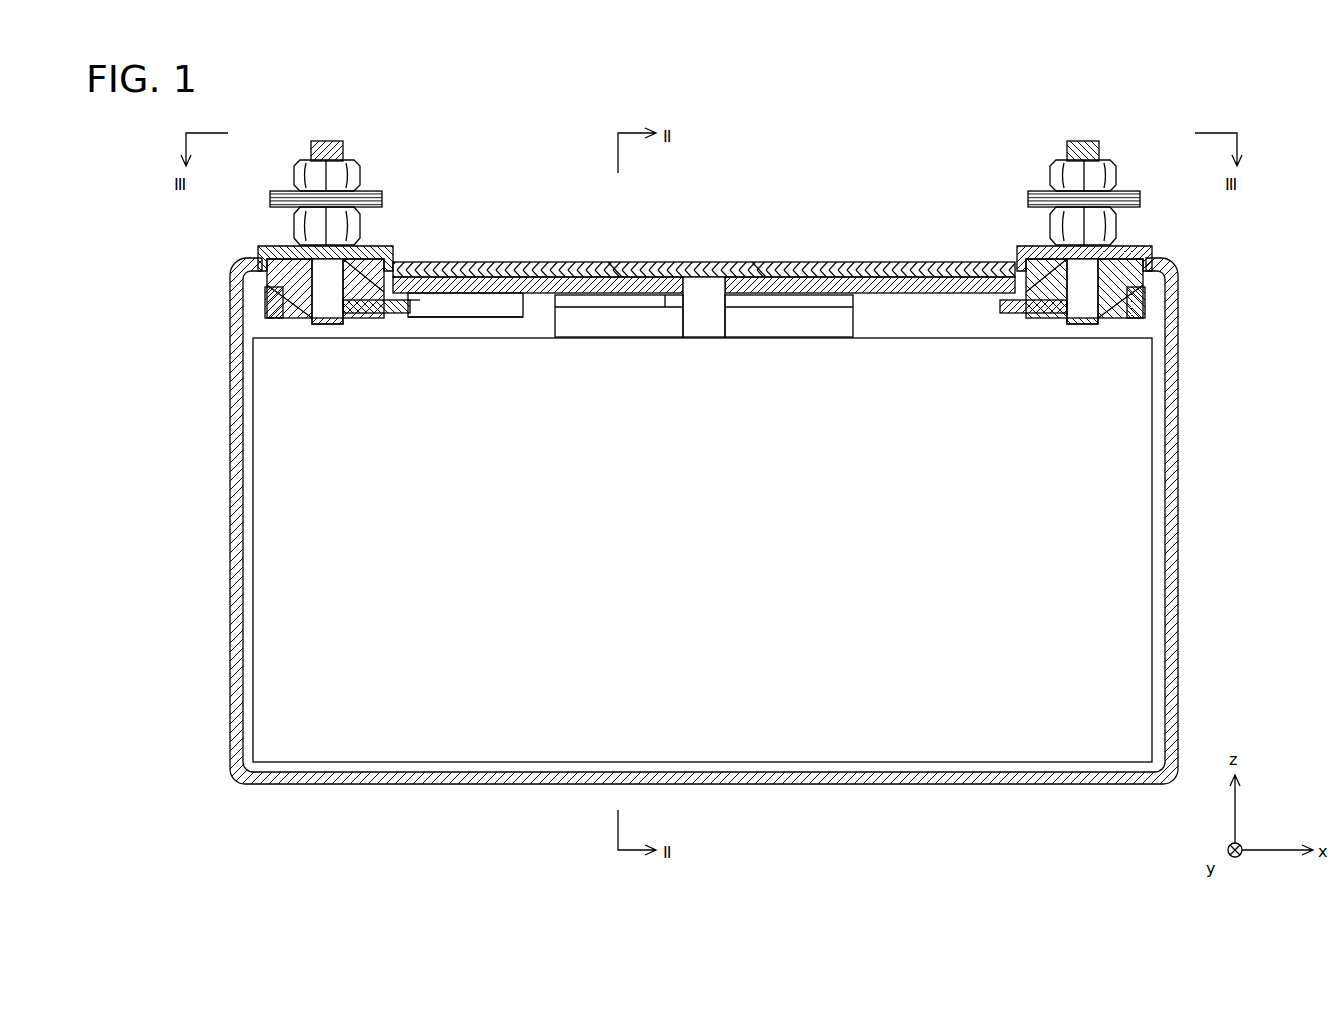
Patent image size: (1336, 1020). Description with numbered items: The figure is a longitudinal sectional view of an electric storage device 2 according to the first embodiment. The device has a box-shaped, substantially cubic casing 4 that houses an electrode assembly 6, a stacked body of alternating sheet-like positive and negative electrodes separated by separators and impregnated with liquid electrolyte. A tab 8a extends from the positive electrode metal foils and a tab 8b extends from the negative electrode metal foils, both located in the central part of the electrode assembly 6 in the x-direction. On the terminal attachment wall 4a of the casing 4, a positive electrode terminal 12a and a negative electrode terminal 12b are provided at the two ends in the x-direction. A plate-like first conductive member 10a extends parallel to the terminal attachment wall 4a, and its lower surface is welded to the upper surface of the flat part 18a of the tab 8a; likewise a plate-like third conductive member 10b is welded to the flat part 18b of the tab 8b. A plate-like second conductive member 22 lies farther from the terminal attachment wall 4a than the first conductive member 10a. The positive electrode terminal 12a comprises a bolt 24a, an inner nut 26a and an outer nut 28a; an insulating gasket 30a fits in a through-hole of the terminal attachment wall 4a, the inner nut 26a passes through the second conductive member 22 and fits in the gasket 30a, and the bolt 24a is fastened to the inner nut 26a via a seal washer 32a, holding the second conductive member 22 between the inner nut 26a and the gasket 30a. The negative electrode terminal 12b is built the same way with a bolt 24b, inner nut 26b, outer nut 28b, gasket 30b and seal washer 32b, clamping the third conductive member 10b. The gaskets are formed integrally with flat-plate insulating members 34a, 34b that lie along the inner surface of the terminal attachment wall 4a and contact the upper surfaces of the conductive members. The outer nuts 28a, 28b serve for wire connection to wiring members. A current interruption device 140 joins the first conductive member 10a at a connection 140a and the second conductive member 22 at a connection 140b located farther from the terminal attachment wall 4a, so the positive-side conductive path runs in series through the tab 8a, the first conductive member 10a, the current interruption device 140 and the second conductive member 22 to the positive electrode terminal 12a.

The electric storage device 2 is at (948, 96).
The casing 4 is at (1178, 522).
The terminal attachment wall 4a is at (718, 275).
The electrode assembly 6 is at (1095, 612).
The tab 8a is at (680, 272).
The tab 8b is at (806, 317).
The first conductive member 10a is at (532, 287).
The third conductive member 10b is at (888, 287).
The positive electrode terminal 12a is at (352, 136).
The negative electrode terminal 12b is at (1093, 136).
The flat part 18a is at (652, 302).
The flat part 18b is at (792, 300).
The second conductive member 22 is at (385, 308).
The bolt 24a is at (305, 228).
The bolt 24b is at (1105, 228).
The inner nut 26a is at (286, 313).
The inner nut 26b is at (1110, 303).
The outer nut 28a is at (304, 173).
The outer nut 28b is at (1107, 175).
The insulating gasket 30a is at (272, 296).
The insulating gasket 30b is at (1140, 295).
The seal washer 32a is at (256, 258).
The seal washer 32b is at (1150, 258).
The insulating member 34a is at (615, 267).
The insulating member 34b is at (758, 275).
The current interruption device 140 is at (442, 318).
The connection 140a is at (495, 290).
The connection 140b is at (418, 307).